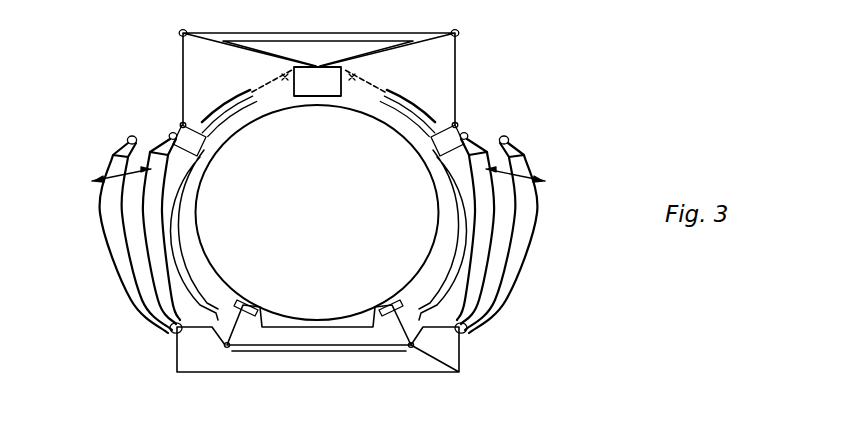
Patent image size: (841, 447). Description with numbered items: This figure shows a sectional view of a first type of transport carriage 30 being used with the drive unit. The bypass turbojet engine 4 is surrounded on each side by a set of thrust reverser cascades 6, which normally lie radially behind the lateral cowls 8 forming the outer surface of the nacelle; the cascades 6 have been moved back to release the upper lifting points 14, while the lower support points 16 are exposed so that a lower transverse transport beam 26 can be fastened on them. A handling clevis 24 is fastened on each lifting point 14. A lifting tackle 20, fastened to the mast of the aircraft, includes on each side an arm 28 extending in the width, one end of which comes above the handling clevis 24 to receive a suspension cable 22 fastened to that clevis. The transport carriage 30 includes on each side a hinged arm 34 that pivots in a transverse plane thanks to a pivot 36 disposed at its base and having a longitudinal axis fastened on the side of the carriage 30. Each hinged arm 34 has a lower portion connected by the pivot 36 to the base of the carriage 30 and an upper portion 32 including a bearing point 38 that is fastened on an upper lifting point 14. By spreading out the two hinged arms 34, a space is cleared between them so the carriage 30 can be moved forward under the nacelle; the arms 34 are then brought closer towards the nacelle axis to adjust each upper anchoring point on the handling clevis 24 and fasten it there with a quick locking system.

The bypass turbojet engine 4 is at (437, 215).
The thrust reverser cascades 6 is at (428, 287).
The lateral cowls 8 is at (472, 263).
The lifting points 14 is at (425, 157).
The support points 16 is at (250, 303).
The lifting tackle 20 is at (345, 33).
The suspension cable 22 is at (460, 88).
The handling clevis 24 is at (468, 131).
The lower transverse transport beam 26 is at (397, 330).
The arm 28 is at (428, 44).
The transport carriage 30 is at (368, 373).
The upper portion 32 is at (531, 157).
The hinged arm 34 is at (537, 243).
The pivot 36 is at (465, 333).
The bearing point 38 is at (509, 140).